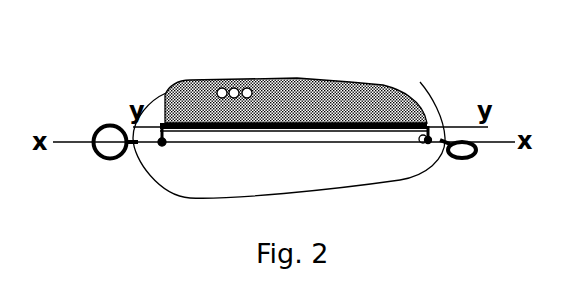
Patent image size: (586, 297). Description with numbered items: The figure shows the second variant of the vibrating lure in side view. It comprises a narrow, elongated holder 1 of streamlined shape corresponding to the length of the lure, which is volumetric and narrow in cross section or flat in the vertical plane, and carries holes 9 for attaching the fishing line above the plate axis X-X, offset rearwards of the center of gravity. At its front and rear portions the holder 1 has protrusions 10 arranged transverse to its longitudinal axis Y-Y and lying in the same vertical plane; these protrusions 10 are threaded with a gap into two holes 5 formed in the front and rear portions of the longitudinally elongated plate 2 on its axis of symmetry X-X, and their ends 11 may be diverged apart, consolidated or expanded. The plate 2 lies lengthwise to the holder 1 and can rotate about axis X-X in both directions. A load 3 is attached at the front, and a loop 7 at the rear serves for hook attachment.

The holder 1 is at (312, 82).
The longitudinally elongated plate 2 is at (317, 160).
The load 3 is at (110, 125).
The holes 5 is at (161, 128).
The loop 7 is at (477, 156).
The holes for the fishing line 9 is at (236, 88).
The protrusions 10 is at (162, 138).
The ends of protrusions 11 is at (132, 143).